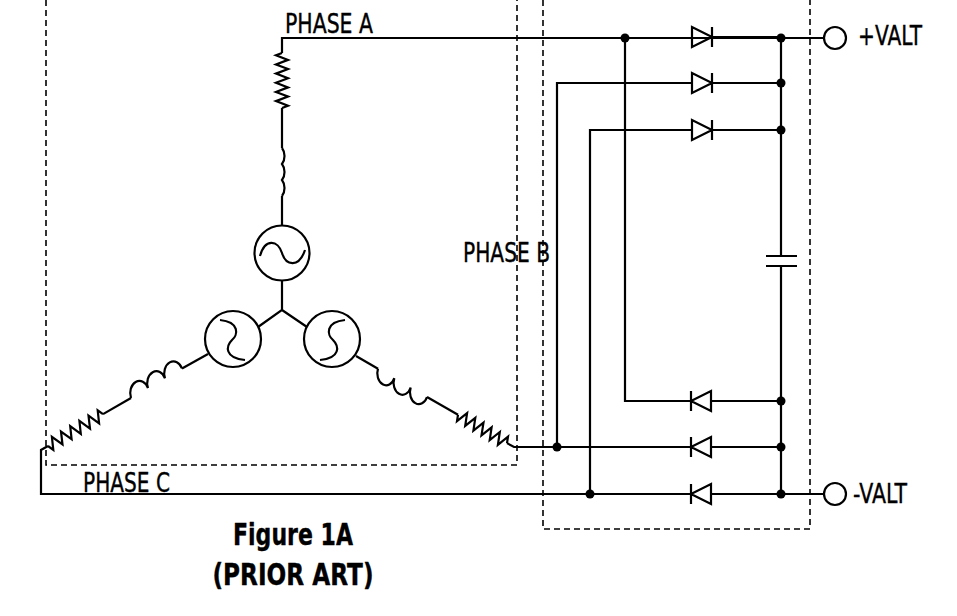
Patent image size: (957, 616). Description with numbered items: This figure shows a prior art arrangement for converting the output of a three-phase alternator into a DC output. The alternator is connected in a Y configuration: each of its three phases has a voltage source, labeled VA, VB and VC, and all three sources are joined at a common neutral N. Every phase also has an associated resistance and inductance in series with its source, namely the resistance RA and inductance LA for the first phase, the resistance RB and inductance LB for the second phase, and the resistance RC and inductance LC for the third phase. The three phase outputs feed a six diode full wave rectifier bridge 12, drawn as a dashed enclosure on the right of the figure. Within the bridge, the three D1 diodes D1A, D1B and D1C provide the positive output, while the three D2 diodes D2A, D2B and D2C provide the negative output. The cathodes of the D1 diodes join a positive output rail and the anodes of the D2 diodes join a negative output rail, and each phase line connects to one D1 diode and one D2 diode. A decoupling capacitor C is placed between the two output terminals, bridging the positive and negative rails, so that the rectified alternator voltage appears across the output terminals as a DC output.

The six diode full wave rectifier bridge 12 is at (810, 195).
The phase A resistance RA is at (300, 80).
The phase A inductance LA is at (301, 172).
The phase A voltage source VA is at (299, 253).
The common neutral N is at (282, 304).
The phase B voltage source VB is at (347, 337).
The phase C voltage source VC is at (217, 337).
The phase B inductance LB is at (406, 379).
The phase B resistance RB is at (483, 420).
The phase C inductance LC is at (148, 377).
The phase C resistance RC is at (75, 424).
The positive output diode for phase A D1A is at (736, 28).
The positive output diode for phase B D1B is at (736, 74).
The positive output diode for phase C D1C is at (736, 121).
The negative output diode for phase A D2A is at (736, 392).
The negative output diode for phase B D2B is at (736, 438).
The negative output diode for phase C D2C is at (736, 484).
The decoupling capacitor C is at (795, 262).